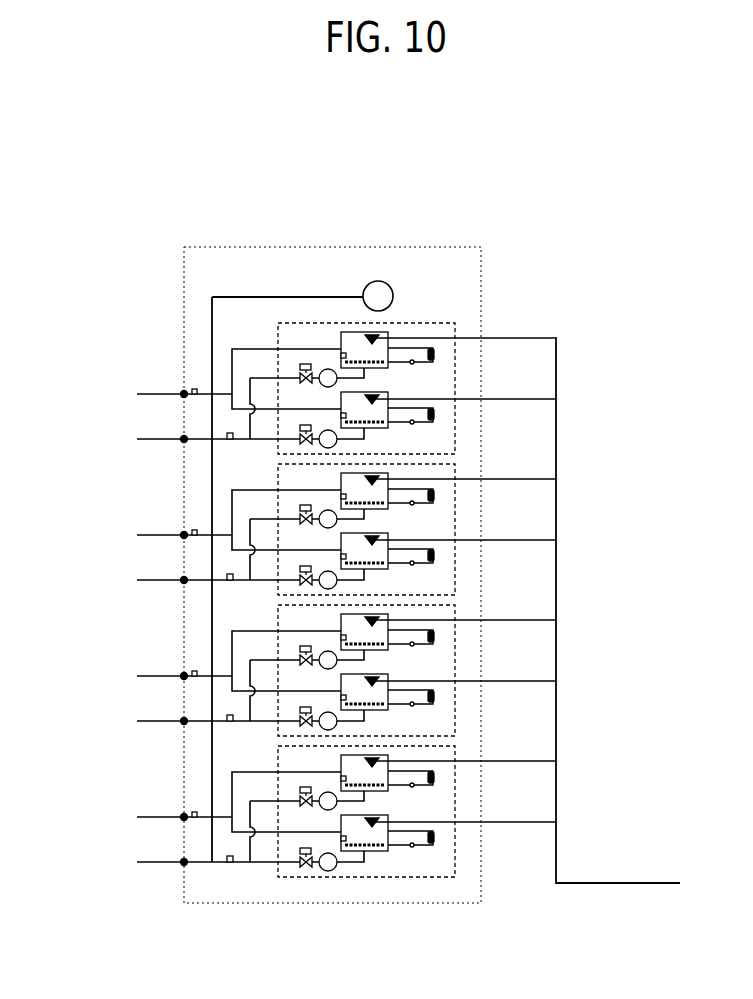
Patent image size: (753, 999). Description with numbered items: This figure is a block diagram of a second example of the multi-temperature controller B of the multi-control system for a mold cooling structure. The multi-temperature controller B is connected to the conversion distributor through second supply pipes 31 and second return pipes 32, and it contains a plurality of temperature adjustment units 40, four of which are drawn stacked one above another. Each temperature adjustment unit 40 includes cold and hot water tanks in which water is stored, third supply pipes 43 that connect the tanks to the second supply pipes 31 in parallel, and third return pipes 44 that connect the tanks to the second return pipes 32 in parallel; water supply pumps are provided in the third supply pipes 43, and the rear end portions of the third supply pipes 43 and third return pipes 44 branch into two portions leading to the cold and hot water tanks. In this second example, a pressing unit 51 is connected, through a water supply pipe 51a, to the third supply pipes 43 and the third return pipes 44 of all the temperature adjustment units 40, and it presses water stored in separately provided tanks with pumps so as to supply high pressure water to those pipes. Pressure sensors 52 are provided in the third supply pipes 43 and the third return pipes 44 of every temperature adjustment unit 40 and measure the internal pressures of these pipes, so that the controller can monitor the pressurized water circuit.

The multi-temperature controller B is at (432, 230).
The second supply pipes 31 is at (137, 439).
The second return pipes 32 is at (137, 393).
The temperature adjustment units 40 is at (349, 246).
The third supply pipes 43 is at (243, 441).
The third return pipes 44 is at (223, 386).
The pressing unit 51 is at (396, 296).
The water supply pipe 51a is at (247, 297).
The pressure sensors 52 is at (195, 388).